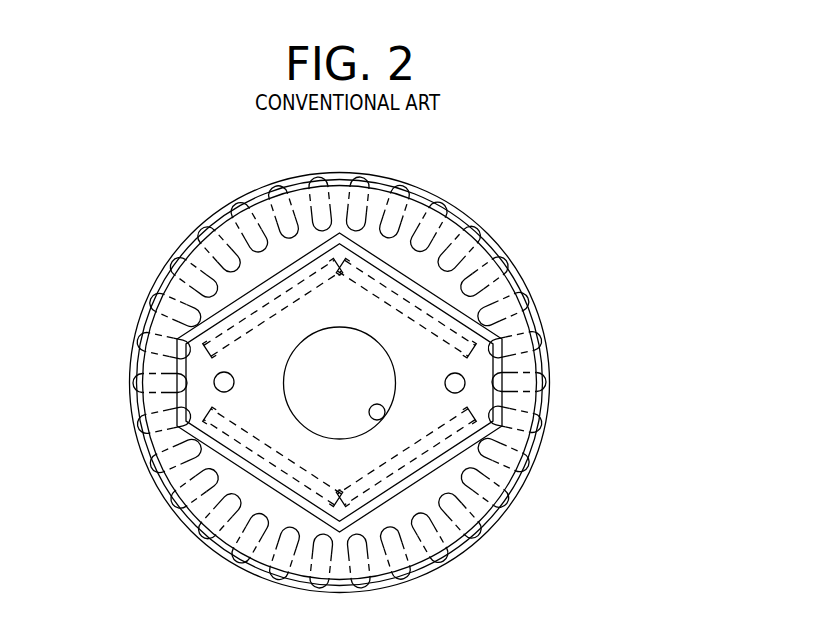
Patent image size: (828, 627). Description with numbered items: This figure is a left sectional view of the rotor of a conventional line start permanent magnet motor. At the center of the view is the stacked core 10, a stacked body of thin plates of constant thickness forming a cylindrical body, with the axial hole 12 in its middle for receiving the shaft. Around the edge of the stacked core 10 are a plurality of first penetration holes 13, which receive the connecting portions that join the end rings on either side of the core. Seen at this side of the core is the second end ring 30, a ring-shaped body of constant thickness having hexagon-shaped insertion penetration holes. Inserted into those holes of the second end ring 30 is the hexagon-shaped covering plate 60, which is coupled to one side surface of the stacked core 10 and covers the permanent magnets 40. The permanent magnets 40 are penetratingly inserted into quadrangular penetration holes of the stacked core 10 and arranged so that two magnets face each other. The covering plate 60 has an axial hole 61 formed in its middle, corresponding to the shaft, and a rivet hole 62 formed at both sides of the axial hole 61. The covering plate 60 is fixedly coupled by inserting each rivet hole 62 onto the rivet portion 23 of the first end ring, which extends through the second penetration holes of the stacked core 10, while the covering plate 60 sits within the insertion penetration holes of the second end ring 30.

The stacked core 10 is at (548, 350).
The second end ring 30 is at (154, 481).
The first penetration holes 13 is at (215, 268).
The covering plate 60 is at (380, 258).
The permanent magnets 40 is at (434, 312).
The axial hole 12 is at (340, 383).
The axial hole 61 is at (386, 420).
The rivet portion 23 is at (217, 374).
The rivet hole 62 is at (213, 382).